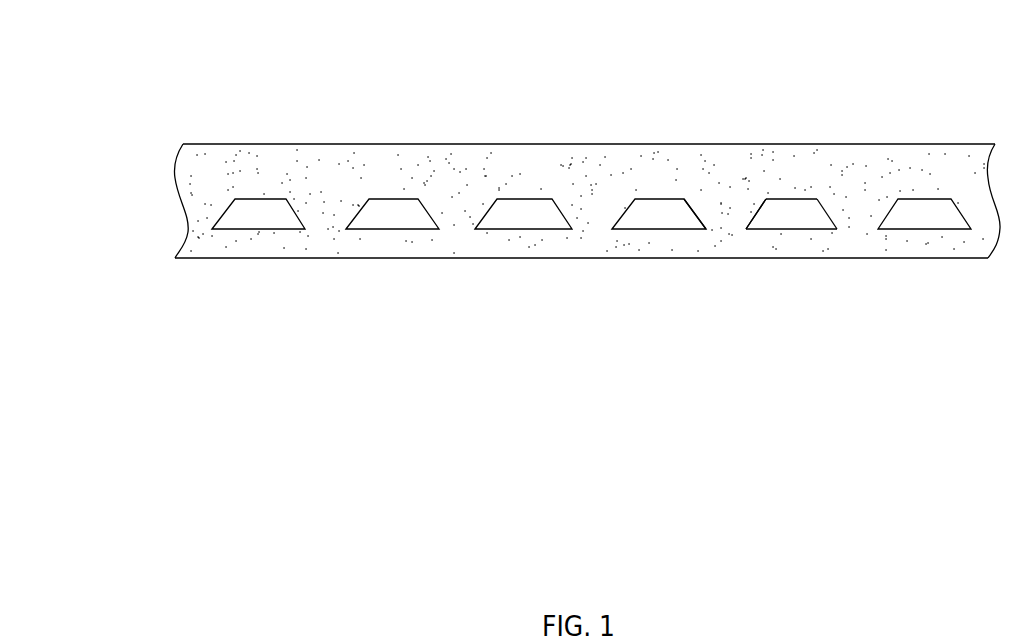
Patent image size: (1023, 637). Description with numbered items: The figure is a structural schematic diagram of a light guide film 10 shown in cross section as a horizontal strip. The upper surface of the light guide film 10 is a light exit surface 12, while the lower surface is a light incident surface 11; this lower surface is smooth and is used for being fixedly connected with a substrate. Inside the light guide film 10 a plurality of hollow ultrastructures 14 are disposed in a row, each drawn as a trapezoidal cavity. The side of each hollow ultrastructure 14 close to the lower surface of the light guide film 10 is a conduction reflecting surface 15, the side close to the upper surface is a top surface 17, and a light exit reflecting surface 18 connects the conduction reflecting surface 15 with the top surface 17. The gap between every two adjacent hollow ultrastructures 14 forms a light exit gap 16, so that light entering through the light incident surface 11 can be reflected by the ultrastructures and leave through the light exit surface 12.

The light guide film 10 is at (282, 115).
The light incident surface 11 is at (478, 258).
The light exit surface 12 is at (585, 144).
The hollow ultrastructure 14 is at (653, 216).
The conduction reflecting surface 15 is at (807, 229).
The light exit gap 16 is at (725, 227).
The top surface 17 is at (798, 198).
The light exit reflecting surface 18 is at (758, 206).